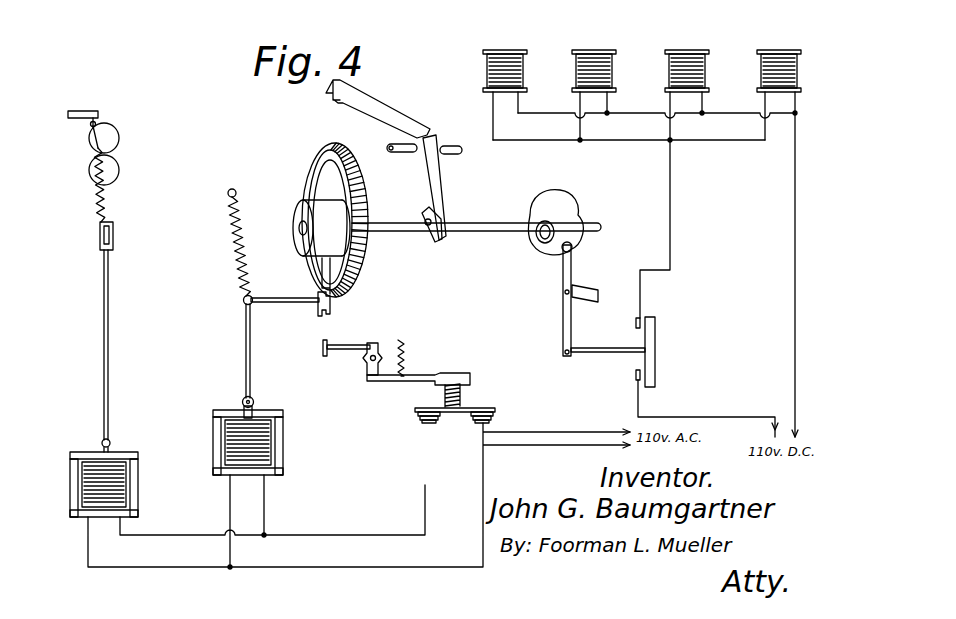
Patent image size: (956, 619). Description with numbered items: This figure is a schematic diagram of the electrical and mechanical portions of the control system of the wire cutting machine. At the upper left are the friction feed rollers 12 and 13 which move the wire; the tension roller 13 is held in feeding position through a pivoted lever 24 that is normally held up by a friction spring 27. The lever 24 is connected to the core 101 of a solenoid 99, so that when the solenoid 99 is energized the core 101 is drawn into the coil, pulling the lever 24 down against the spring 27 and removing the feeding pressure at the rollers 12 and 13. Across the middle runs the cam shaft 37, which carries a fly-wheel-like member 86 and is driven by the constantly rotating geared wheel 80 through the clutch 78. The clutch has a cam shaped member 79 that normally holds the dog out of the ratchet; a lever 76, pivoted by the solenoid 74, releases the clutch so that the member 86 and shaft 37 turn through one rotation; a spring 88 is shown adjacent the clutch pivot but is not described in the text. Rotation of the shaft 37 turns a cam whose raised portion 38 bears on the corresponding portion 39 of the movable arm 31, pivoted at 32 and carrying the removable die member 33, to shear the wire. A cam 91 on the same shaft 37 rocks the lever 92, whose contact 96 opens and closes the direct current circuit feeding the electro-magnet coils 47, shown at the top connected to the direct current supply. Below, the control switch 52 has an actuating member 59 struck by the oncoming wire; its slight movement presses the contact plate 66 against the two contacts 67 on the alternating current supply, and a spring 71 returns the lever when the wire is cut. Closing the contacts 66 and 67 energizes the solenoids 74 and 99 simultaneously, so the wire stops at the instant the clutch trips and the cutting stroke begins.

The top feed roller 12 is at (114, 131).
The tension roller 13 is at (118, 168).
The friction spring 27 is at (108, 200).
The pivoted lever 24 is at (109, 322).
The solenoid 99 is at (141, 461).
The core 101 is at (128, 449).
The spring 88 is at (232, 217).
The clutch 78 is at (292, 304).
The cam shaped member 79 is at (318, 293).
The lever 76 is at (246, 343).
The solenoid 74 is at (290, 437).
The geared wheel 80 is at (365, 248).
The fly-wheel-like member 86 is at (322, 208).
The removable die member 33 is at (346, 106).
The movable arm 31 is at (438, 175).
The pivot 32 is at (445, 143).
The raised cam portion 38 is at (425, 220).
The arm portion 39 is at (433, 242).
The cam shaft 37 is at (476, 223).
The cam 91 is at (546, 210).
The contact 96 is at (578, 200).
The lever 92 is at (566, 280).
The actuating member 59 is at (332, 345).
The spring 71 is at (406, 352).
The control switch 52 is at (450, 372).
The contact plate 66 is at (472, 407).
The contacts 67 is at (421, 425).
The coils 47 is at (707, 63).